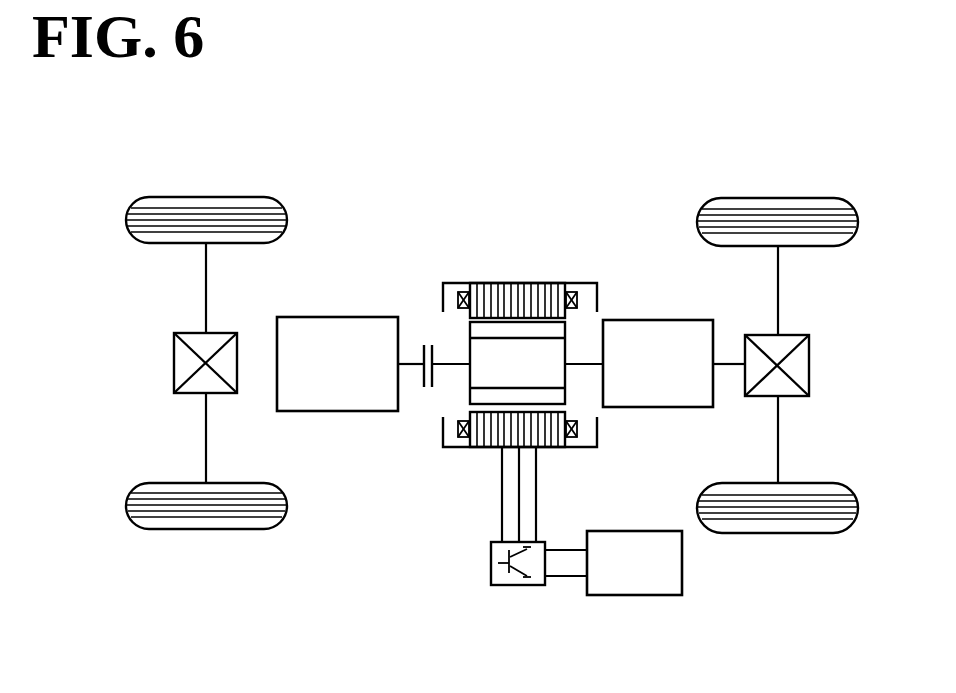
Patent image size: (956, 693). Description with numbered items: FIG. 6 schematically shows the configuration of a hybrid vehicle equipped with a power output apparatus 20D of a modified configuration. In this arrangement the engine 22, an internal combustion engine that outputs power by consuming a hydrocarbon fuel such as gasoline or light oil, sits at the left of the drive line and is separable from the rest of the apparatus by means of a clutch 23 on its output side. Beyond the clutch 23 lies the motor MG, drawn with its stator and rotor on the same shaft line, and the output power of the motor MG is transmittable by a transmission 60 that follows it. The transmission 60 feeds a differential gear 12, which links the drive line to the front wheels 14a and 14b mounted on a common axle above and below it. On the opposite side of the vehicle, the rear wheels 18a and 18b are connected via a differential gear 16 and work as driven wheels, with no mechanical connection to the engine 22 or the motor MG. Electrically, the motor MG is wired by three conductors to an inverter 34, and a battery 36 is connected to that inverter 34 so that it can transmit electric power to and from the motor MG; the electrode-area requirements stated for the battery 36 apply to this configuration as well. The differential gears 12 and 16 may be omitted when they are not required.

The power output apparatus 20D is at (421, 187).
The rear wheel 18a is at (205, 197).
The rear wheel 18b is at (206, 530).
The differential gear 16 is at (174, 352).
The engine 22 is at (338, 413).
The clutch 23 is at (426, 390).
The motor MG is at (525, 283).
The transmission 60 is at (657, 320).
The differential gear 12 is at (810, 362).
The front wheel 14a is at (777, 198).
The front wheel 14b is at (777, 533).
The inverter 34 is at (516, 586).
The battery 36 is at (634, 596).